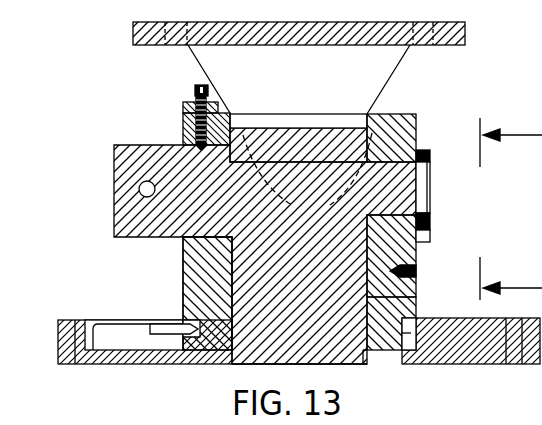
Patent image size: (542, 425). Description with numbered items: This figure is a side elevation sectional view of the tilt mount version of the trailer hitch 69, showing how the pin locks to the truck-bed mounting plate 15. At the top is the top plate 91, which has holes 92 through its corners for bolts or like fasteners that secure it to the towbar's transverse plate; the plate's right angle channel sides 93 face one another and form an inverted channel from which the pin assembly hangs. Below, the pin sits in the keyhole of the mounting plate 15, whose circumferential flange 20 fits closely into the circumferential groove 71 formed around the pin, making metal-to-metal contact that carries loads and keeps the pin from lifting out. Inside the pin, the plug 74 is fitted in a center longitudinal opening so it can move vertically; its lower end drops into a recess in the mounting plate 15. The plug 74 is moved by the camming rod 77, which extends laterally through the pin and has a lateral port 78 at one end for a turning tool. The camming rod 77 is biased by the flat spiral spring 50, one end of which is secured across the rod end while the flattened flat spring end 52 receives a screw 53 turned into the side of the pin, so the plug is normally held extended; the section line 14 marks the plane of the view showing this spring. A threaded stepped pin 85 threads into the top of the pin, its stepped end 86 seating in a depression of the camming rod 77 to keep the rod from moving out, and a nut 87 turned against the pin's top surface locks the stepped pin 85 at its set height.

The section line 14- 14 is at (497, 211).
The mounting plate 15 is at (474, 364).
The circumferential flange 20 is at (150, 322).
The flat spiral spring 50 is at (430, 210).
The flat spring end 52 is at (417, 253).
The screw 53 is at (420, 271).
The trailer hitch 69 is at (421, 115).
The circumferential groove 71 is at (395, 364).
The plug 74 is at (416, 297).
The camming rod 77 is at (114, 160).
The lateral port 78 is at (139, 188).
The threaded stepped pin 85 is at (193, 95).
The stepped end 86 is at (183, 140).
The nut 87 is at (218, 104).
The top plate 91 is at (223, 22).
The holes 92 is at (166, 22).
The channel sides 93 is at (380, 73).